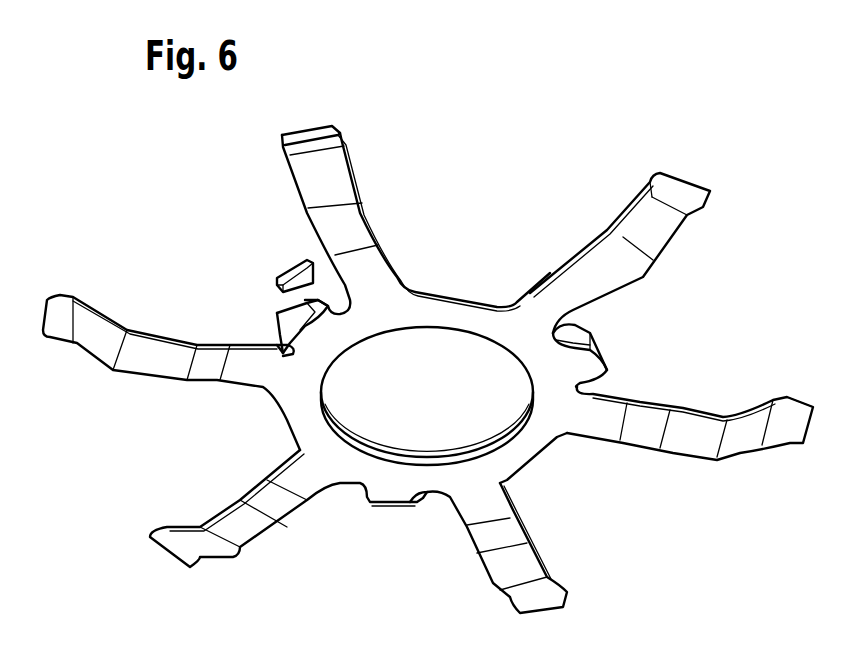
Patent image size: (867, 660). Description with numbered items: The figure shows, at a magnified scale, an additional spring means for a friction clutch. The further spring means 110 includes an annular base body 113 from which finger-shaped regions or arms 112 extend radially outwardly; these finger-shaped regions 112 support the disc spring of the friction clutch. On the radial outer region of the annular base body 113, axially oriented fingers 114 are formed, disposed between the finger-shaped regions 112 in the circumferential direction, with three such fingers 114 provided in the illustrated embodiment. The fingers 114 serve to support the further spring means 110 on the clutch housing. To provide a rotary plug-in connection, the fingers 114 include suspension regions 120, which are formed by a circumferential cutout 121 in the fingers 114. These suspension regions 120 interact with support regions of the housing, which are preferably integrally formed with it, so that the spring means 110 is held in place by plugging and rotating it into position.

The further spring means 110 is at (484, 242).
The finger-shaped regions 112 is at (765, 432).
The annular base body 113 is at (528, 455).
The axially oriented fingers 114 is at (590, 352).
The suspension regions 120 is at (283, 272).
The circumferential cutout 121 is at (290, 300).